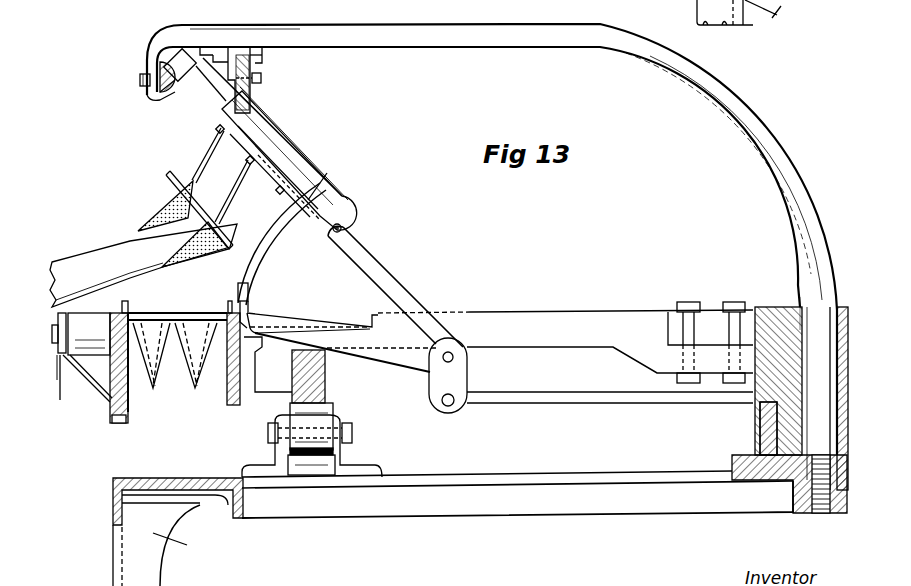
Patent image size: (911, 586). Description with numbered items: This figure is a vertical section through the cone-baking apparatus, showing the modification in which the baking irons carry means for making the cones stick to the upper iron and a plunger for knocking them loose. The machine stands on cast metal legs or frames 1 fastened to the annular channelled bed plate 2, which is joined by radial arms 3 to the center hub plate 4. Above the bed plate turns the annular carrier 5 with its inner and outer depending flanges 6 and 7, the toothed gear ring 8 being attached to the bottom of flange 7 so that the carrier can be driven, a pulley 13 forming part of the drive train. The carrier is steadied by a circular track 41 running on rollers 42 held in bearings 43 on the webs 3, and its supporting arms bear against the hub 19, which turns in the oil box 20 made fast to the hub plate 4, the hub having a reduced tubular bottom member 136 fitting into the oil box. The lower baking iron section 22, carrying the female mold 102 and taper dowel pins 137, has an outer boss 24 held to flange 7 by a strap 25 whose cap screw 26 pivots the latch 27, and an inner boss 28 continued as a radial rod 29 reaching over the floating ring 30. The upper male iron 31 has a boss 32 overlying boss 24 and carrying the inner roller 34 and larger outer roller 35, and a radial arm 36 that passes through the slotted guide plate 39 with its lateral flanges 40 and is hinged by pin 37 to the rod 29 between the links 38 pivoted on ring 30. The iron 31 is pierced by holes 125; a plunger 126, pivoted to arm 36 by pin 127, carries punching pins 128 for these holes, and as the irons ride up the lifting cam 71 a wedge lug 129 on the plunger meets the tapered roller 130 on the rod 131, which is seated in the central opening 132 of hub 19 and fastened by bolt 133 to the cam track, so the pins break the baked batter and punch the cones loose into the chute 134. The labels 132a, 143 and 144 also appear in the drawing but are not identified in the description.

The legs or cast metal frames 1 is at (170, 546).
The annular channelled bed plate 2 is at (210, 480).
The radial arms 3 is at (465, 507).
The center hub plate 4 is at (767, 483).
The annular rotatable carrier 5 is at (250, 306).
The inner circumferential flange 6 is at (234, 405).
The outer circumferential flange 7 is at (129, 400).
The annular toothed ring or gear 8 is at (127, 421).
The pulley 13 is at (514, 318).
The hub 19 is at (764, 312).
The oil box 20 is at (760, 446).
The baking iron section 22 is at (207, 313).
The boss 24 is at (97, 327).
The strap 25 is at (95, 385).
The cap screw 26 is at (57, 358).
The latch 27 is at (65, 357).
The boss 28 is at (257, 346).
The radial rod 29 is at (408, 360).
The floating ring 30 is at (448, 407).
The upper or male baking iron 31 is at (282, 163).
The boss 32 is at (193, 92).
The inner antifriction roller 34 is at (176, 91).
The outer roller 35 is at (162, 70).
The radial arm 36 is at (368, 259).
The hinge pin 37 is at (462, 358).
The links 38 is at (440, 385).
The slotted guide plate 39 is at (267, 236).
The lateral flanges 40 is at (249, 288).
The circular track 41 is at (326, 371).
The rollers 42 is at (313, 420).
The bearings 43 is at (340, 460).
The lifting cam 71 is at (165, 84).
The female mold member 102 is at (195, 390).
The holes 125 is at (292, 168).
The plunger 126 is at (283, 148).
The pin 127 is at (341, 226).
The punching pin 128 is at (262, 130).
The wedge lug or boss 129 is at (258, 116).
The roller 130 is at (252, 106).
The rod 131 is at (373, 33).
The central opening 132 is at (815, 327).
The flange 132a is at (290, 43).
The bolt 133 is at (140, 80).
The chute 134 is at (137, 258).
The reduced tubular bottom member 136 is at (760, 425).
The taper dowel pins 137 is at (126, 306).
The rods 143 is at (212, 183).
The bolted block 144 is at (707, 322).